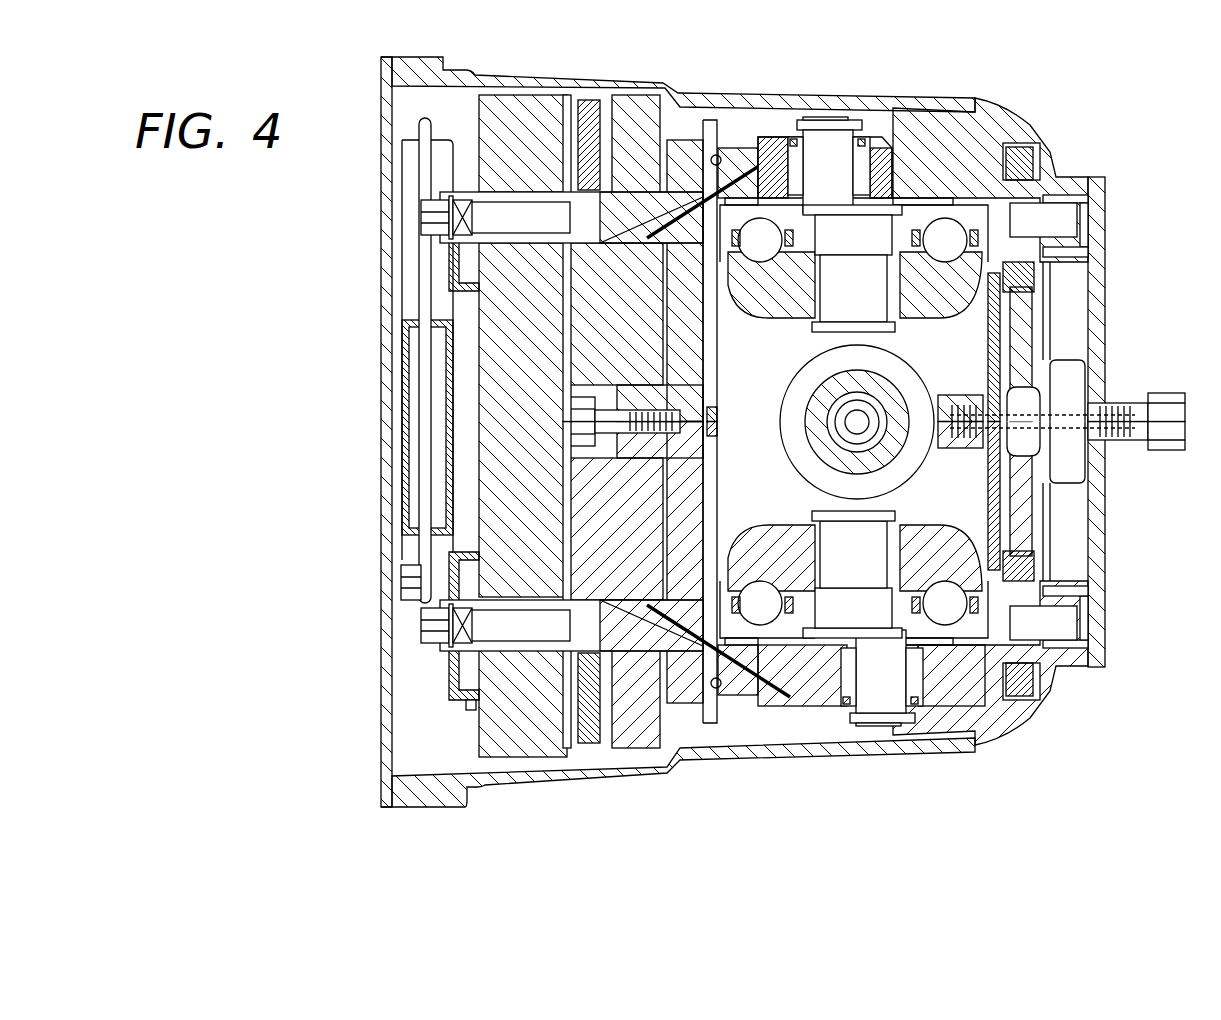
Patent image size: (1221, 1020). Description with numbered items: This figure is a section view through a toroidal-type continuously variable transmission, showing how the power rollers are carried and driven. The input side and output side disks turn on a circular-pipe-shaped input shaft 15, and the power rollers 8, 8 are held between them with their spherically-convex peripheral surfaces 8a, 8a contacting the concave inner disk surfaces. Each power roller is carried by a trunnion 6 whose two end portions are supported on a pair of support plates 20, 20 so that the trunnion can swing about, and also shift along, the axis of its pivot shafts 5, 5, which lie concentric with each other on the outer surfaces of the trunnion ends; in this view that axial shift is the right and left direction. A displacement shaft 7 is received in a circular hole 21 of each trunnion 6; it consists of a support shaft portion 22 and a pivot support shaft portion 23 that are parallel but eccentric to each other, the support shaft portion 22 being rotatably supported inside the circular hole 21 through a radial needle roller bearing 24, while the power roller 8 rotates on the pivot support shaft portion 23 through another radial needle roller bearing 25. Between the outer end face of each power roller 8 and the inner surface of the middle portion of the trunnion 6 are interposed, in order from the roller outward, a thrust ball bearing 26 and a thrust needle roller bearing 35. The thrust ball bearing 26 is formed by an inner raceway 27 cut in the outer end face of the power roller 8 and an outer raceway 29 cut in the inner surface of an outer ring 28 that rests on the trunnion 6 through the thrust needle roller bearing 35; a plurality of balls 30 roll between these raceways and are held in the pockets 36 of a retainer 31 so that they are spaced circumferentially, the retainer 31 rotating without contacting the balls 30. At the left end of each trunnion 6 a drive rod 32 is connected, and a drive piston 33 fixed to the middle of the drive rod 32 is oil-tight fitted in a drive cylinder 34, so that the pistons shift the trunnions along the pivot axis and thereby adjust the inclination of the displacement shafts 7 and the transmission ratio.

The pivot shaft 5 is at (683, 140).
The trunnion 6 is at (1000, 150).
The displacement shaft 7 is at (887, 218).
The power roller 8 is at (897, 397).
The peripheral surface 8a is at (1027, 293).
The input shaft 15 is at (1070, 380).
The support plate 20 is at (700, 477).
The circular hole 21 is at (820, 160).
The support shaft portion 22 is at (838, 150).
The pivot support shaft portion 23 is at (887, 513).
The radial needle roller bearing 24 is at (853, 187).
The radial needle roller bearing 25 is at (800, 325).
The thrust ball bearing 26 is at (768, 228).
The inner raceway 27 is at (1040, 262).
The outer ring 28 is at (1068, 177).
The outer raceway 29 is at (1040, 212).
The ball 30 is at (737, 140).
The retainer 31 is at (793, 238).
The drive rod 32 is at (513, 210).
The drive piston 33 is at (605, 140).
The drive cylinder 34 is at (570, 100).
The thrust needle roller bearing 35 is at (913, 227).
The pocket 36 is at (908, 260).